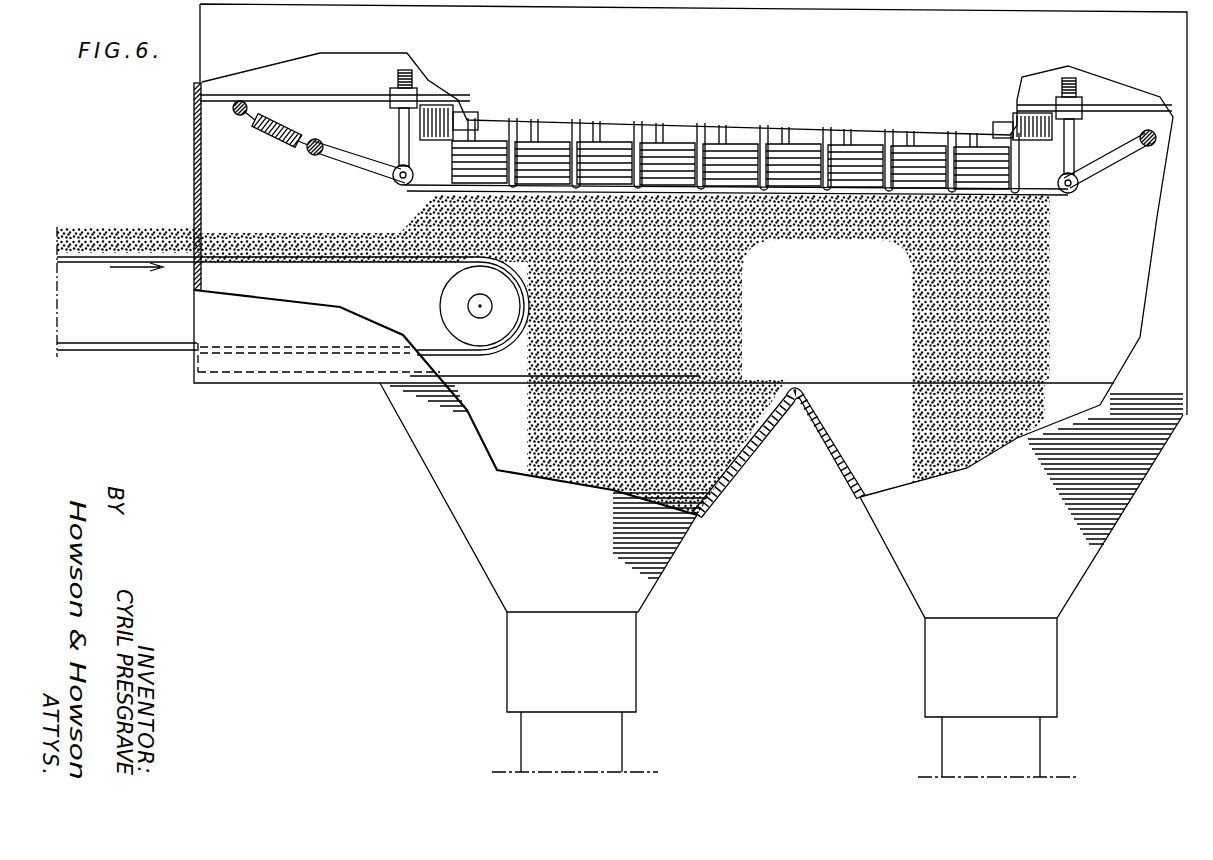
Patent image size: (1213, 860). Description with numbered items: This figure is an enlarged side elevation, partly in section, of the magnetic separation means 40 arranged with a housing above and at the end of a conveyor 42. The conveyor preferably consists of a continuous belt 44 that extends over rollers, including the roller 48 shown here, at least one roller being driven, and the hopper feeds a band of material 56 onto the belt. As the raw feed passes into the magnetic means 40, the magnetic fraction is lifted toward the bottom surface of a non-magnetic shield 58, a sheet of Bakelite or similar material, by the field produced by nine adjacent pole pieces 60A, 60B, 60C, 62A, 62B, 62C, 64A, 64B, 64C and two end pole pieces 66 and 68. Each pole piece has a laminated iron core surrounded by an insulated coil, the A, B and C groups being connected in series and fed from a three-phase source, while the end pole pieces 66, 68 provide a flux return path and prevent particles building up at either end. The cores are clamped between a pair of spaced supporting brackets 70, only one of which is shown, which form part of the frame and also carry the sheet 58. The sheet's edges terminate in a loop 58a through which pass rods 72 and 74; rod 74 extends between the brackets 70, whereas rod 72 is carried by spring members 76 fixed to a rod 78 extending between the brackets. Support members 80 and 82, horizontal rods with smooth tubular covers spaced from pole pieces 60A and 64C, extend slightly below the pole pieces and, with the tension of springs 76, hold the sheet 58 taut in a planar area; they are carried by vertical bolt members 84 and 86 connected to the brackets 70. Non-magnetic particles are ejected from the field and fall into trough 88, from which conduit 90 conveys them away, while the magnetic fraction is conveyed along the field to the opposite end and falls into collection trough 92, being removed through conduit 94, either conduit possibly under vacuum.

The magnetic means 40 is at (690, 209).
The conveyor 42 is at (390, 267).
The continuous belt 44 is at (303, 263).
The roller 48 is at (447, 305).
The band of material 56 is at (128, 233).
The non-magnetic shield 58 is at (420, 187).
The loop 58a is at (320, 141).
The pole piece 60A is at (485, 143).
The pole piece 60B is at (543, 143).
The pole piece 60C is at (600, 148).
The pole piece 62A is at (670, 150).
The pole piece 62B is at (735, 150).
The pole piece 62C is at (793, 152).
The pole piece 64A is at (855, 155).
The pole piece 64B is at (920, 155).
The pole piece 64C is at (982, 157).
The end pole piece 66 is at (437, 141).
The end pole piece 68 is at (1038, 142).
The supporting bracket 70 is at (317, 96).
The rod 72 is at (311, 153).
The rod 74 is at (1142, 140).
The spring member 76 is at (277, 141).
The rod 78 is at (241, 102).
The support member 80 is at (394, 172).
The support member 82 is at (1072, 178).
The vertical bolt member 84 is at (398, 146).
The vertical bolt member 86 is at (1070, 148).
The trough 88 is at (545, 547).
The conduit 90 is at (530, 750).
The collection trough 92 is at (1021, 555).
The conduit 94 is at (957, 755).